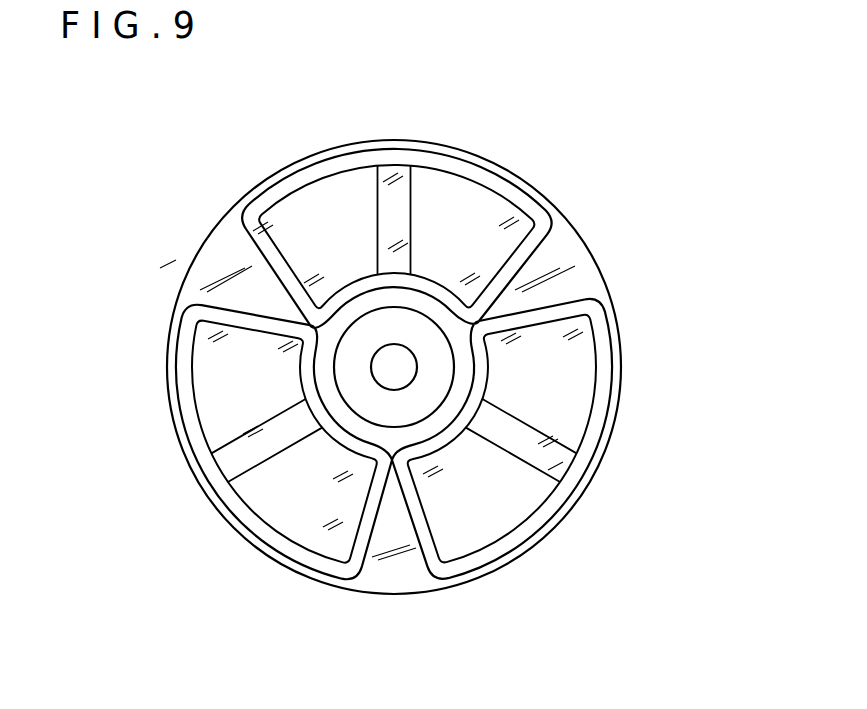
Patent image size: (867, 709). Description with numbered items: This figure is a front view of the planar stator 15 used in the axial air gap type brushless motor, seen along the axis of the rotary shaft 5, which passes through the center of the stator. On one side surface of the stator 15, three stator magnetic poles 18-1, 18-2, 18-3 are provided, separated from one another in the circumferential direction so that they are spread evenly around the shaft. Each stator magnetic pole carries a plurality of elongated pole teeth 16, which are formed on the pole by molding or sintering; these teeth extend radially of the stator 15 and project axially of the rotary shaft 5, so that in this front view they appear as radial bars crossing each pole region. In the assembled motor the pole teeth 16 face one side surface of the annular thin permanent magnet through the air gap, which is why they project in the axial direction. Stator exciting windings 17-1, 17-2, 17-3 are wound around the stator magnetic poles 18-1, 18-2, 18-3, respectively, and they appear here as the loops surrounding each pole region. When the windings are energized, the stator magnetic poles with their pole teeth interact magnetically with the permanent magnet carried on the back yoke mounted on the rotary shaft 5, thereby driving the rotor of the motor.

The rotary shaft 5 is at (390, 354).
The planar stator 15 is at (592, 256).
The elongated pole teeth 16 is at (414, 192).
The stator exciting winding 17-1 is at (293, 172).
The stator exciting winding 17-2 is at (590, 485).
The stator exciting winding 17-3 is at (185, 448).
The stator magnetic pole 18-1 is at (490, 205).
The stator magnetic pole 18-2 is at (500, 518).
The stator magnetic pole 18-3 is at (210, 387).